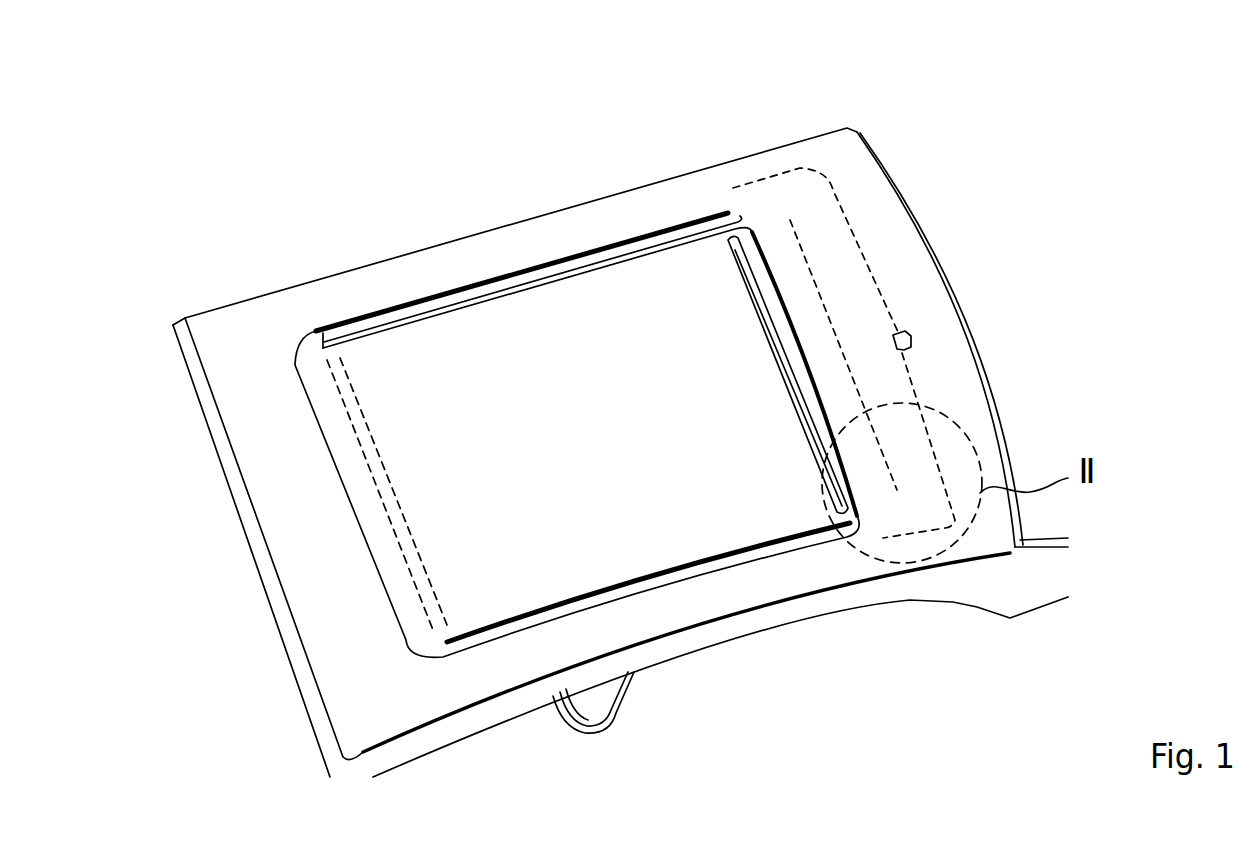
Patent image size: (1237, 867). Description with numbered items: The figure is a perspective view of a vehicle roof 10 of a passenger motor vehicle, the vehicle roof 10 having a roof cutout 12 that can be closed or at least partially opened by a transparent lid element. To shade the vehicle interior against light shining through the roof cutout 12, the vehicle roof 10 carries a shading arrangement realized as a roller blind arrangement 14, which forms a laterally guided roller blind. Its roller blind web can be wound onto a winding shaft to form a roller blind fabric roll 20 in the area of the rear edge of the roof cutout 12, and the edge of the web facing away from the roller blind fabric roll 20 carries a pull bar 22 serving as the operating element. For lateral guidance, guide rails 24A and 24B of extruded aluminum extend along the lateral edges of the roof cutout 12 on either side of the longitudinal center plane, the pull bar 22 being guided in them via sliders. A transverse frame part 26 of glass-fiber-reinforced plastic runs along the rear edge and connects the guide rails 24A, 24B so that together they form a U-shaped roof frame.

The vehicle roof 10 is at (1030, 119).
The roof cutout 12 is at (300, 340).
The roller blind arrangement 14 is at (757, 307).
The roller blind fabric roll 20 is at (837, 334).
The pull bar 22 is at (793, 407).
The guide rail 24A is at (713, 567).
The guide rail 24B is at (443, 300).
The transverse frame part 26 is at (832, 193).